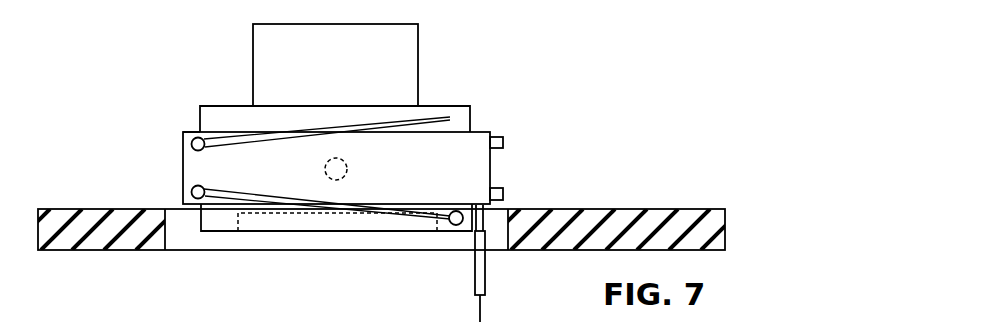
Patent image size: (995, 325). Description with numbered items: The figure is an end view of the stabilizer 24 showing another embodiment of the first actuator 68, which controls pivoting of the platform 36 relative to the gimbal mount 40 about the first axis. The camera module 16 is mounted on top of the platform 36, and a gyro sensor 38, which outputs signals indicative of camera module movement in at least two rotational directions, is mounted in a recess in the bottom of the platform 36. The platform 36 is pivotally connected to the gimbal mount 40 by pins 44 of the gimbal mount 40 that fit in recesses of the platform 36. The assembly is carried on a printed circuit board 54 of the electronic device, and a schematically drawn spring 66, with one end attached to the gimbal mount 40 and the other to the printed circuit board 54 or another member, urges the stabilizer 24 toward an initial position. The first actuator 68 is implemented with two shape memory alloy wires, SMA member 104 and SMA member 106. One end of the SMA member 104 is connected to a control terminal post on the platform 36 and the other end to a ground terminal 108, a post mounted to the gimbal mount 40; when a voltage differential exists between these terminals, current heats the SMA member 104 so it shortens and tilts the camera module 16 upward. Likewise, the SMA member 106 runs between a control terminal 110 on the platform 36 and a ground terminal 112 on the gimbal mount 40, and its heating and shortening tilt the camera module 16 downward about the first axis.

The camera module 16 is at (418, 37).
The stabilizer 24 is at (150, 114).
The platform 36 is at (240, 106).
The gyro sensor 38 is at (343, 222).
The gimbal mount 40 is at (493, 165).
The pins 44 is at (348, 168).
The printed circuit board 54 is at (62, 209).
The spring 66 is at (487, 270).
The first actuator 68 is at (231, 124).
The SMA member 104 is at (428, 120).
The SMA member 106 is at (463, 115).
The ground terminal 108 is at (192, 143).
The control terminal 110 is at (451, 225).
The ground terminal 112 is at (192, 191).